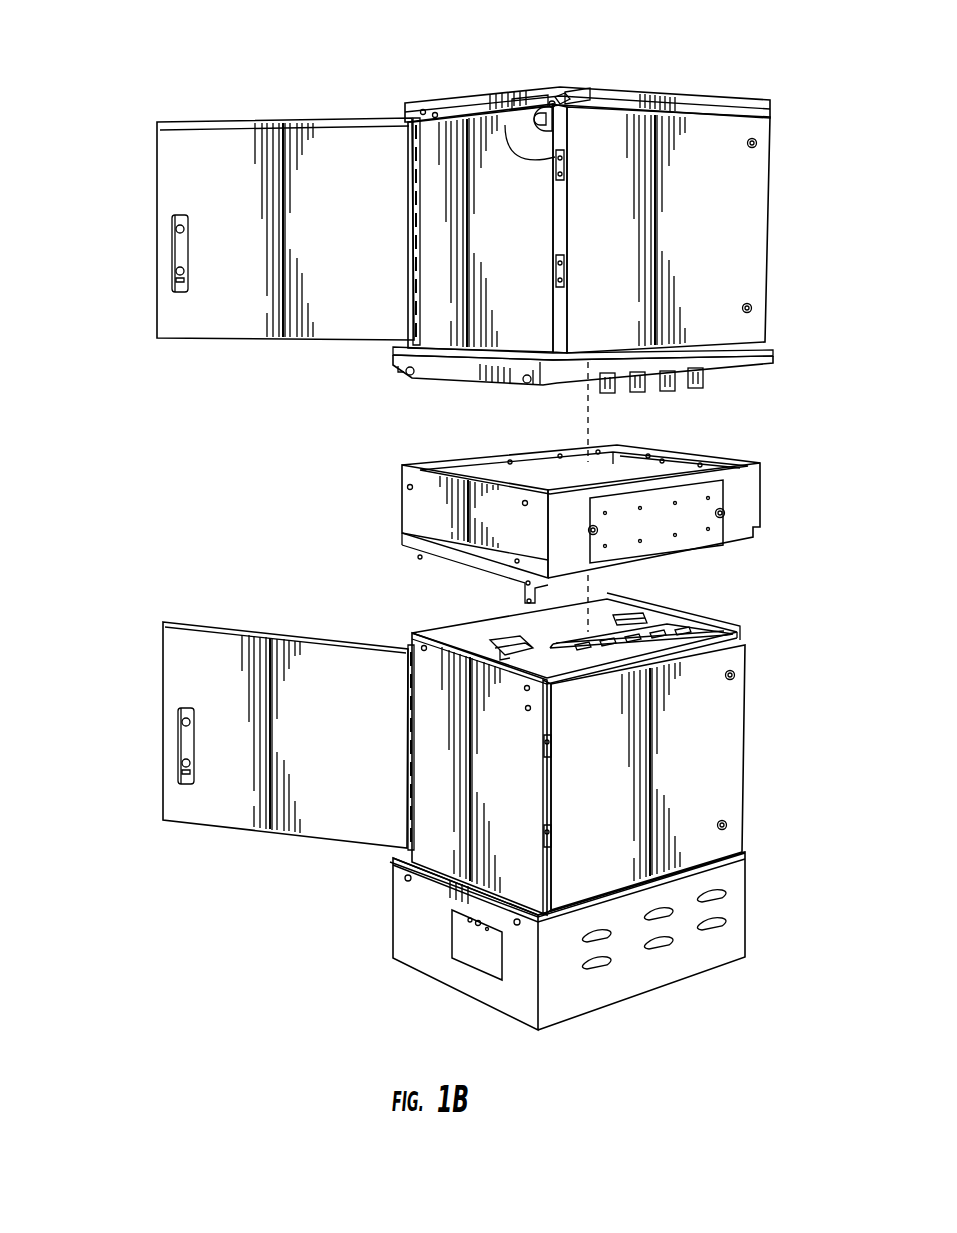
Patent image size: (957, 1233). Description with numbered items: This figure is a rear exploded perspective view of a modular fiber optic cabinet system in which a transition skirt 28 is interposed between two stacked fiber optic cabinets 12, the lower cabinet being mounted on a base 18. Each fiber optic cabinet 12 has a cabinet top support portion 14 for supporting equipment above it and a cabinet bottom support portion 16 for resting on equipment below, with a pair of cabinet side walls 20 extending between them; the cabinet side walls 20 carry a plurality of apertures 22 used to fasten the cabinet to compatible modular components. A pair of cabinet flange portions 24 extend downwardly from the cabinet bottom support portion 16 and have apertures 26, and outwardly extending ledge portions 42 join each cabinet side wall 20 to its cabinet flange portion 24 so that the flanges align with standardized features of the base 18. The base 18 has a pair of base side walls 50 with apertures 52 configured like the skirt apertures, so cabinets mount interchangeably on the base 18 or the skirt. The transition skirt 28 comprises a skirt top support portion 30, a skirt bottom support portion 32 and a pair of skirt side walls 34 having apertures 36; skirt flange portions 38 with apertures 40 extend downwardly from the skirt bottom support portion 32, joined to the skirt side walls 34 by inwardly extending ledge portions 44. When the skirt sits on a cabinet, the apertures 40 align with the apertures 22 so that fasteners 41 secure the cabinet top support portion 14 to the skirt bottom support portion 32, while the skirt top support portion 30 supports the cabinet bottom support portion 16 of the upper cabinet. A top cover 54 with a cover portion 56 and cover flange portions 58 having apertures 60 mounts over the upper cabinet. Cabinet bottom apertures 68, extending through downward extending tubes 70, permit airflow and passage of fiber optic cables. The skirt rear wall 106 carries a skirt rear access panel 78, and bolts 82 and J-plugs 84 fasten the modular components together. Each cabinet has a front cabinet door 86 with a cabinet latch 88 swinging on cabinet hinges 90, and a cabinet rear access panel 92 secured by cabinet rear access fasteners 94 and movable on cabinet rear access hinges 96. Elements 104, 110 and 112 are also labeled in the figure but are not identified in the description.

The fiber optic cabinet 12 is at (780, 240).
The cabinet top support portion 14 is at (746, 641).
The cabinet bottom support portion 16 is at (578, 352).
The base 18 is at (455, 285).
The cabinet side wall 20 is at (427, 677).
The apertures 22 is at (526, 706).
The cabinet flange portion 24 is at (445, 372).
The apertures 26 is at (405, 375).
The transition skirt 28 is at (796, 548).
The skirt top support portion 30 is at (405, 470).
The skirt bottom support portion 32 is at (720, 555).
The skirt side wall 34 is at (405, 518).
The apertures 36 is at (522, 503).
The skirt flange portion 38 is at (405, 545).
The apertures 40 is at (526, 585).
The fastener 41 is at (396, 364).
The outwardly extending ledge portion 42 is at (500, 363).
The inwardly extending ledge portion 44 is at (400, 540).
The base side wall 50 is at (462, 962).
The apertures 52 is at (405, 882).
The top cover 54 is at (780, 95).
The cover portion 56 is at (585, 95).
The cover flange portion 58 is at (522, 95).
The apertures 60 is at (428, 120).
The cabinet bottom aperture 68 is at (668, 393).
The downward extending tube 70 is at (700, 385).
The skirt rear access panel 78 is at (700, 532).
The bolt 82 is at (422, 110).
The J-plug 84 is at (556, 100).
The front cabinet door 86 is at (185, 175).
The cabinet latch 88 is at (172, 258).
The cabinet hinge 90 is at (410, 130).
The cabinet rear access panel 92 is at (760, 205).
The cabinet rear access fastener 94 is at (760, 143).
The cabinet rear access hinge 96 is at (550, 272).
The tray opening 104 is at (470, 462).
The skirt rear wall 106 is at (750, 487).
The vent slot 110 is at (745, 945).
The rim flange 112 is at (775, 350).